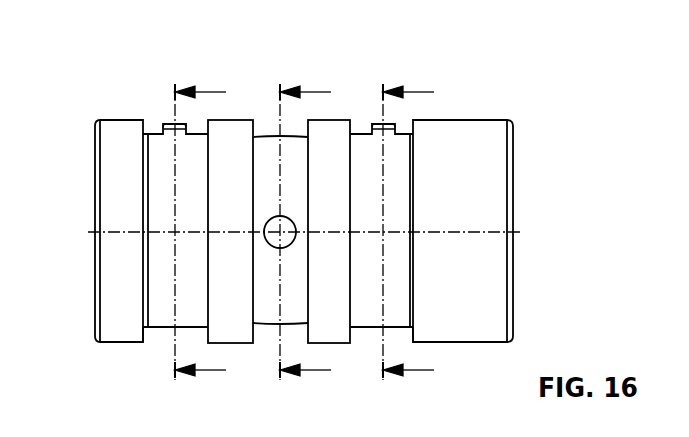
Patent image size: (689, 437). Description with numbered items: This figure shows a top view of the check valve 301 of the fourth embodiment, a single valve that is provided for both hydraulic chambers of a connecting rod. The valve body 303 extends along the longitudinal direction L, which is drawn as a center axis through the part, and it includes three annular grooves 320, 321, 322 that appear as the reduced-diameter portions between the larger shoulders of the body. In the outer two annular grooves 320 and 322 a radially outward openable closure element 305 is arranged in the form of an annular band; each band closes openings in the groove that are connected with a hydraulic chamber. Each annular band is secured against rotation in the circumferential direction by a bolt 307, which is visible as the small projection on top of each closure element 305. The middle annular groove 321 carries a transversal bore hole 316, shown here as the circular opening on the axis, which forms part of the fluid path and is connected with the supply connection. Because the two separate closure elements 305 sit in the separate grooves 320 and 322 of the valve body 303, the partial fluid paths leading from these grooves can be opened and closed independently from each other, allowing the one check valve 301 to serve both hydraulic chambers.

The check valve 301 is at (343, 212).
The valve body 303 is at (515, 185).
The closure element 305 is at (158, 266).
The bolt 307 is at (162, 121).
The transversal bore hole 316 is at (267, 222).
The annular groove 320 is at (148, 341).
The annular groove 321 is at (262, 326).
The annular groove 322 is at (410, 338).
The longitudinal direction L is at (90, 231).